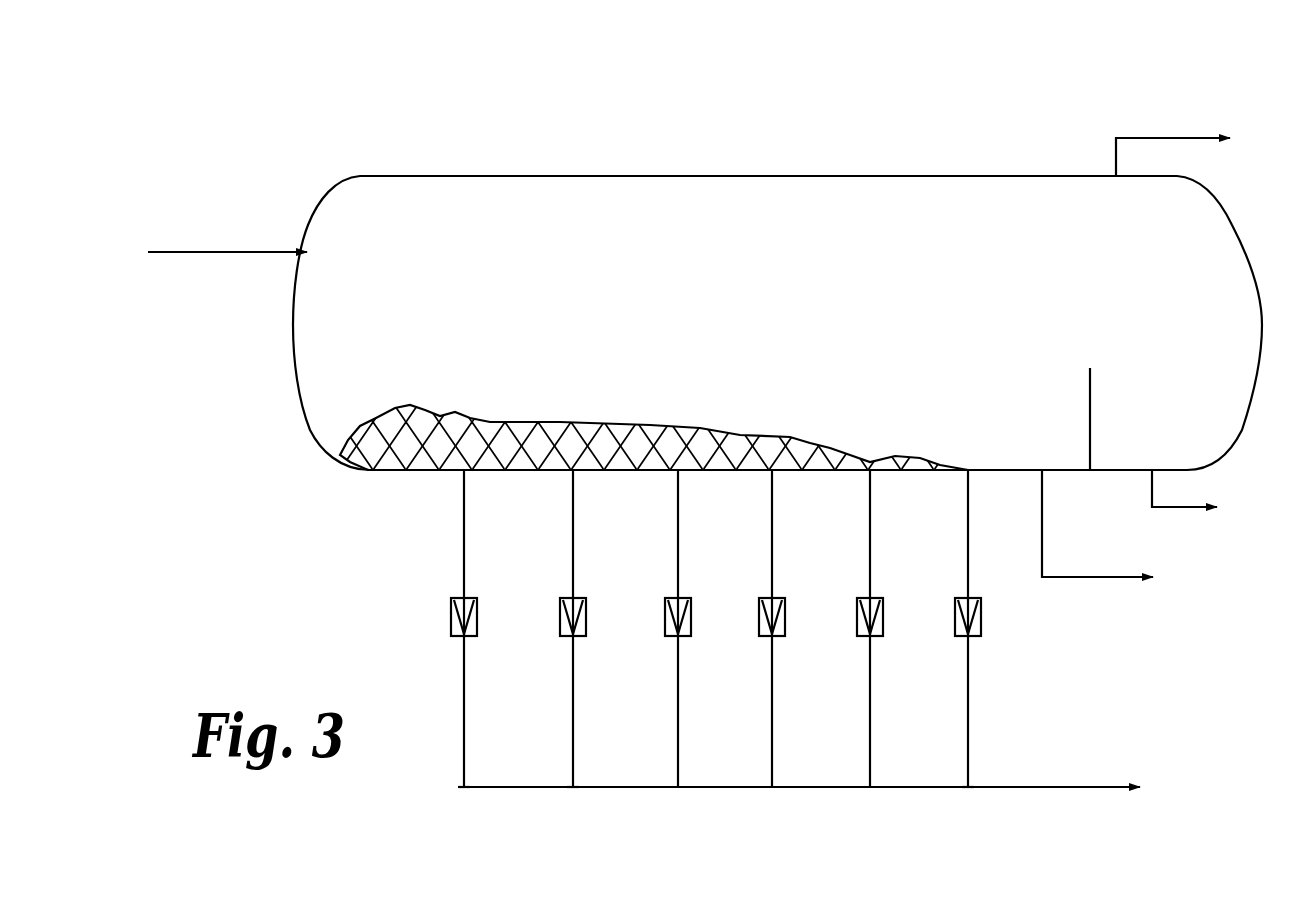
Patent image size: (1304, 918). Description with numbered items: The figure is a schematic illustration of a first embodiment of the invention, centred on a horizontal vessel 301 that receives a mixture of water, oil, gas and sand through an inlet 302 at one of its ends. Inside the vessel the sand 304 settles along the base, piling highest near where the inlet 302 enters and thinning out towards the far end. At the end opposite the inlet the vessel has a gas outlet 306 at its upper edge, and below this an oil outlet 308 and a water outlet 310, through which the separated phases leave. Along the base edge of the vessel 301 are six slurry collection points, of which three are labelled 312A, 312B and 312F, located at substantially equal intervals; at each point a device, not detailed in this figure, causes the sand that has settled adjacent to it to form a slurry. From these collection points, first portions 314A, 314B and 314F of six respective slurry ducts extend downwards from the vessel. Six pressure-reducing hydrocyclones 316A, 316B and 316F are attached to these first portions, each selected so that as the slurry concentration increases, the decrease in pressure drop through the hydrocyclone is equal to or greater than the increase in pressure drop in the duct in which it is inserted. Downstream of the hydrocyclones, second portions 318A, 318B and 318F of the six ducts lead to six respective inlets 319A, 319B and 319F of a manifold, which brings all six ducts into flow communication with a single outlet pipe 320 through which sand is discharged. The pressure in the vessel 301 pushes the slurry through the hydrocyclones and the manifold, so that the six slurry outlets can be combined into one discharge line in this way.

The horizontal vessel 301 is at (1225, 247).
The inlet 302 is at (256, 252).
The sand 304 is at (370, 468).
The gas outlet 306 is at (1152, 138).
The oil outlet 308 is at (1190, 505).
The water outlet 310 is at (1065, 577).
The slurry collection point 312A is at (466, 480).
The slurry collection point 312B is at (574, 480).
The slurry collection point 312F is at (970, 470).
The first portion of slurry duct 314A is at (464, 518).
The first portion of slurry duct 314B is at (573, 518).
The first portion of slurry duct 314F is at (968, 518).
The pressure-reducing hydrocyclone 316A is at (466, 612).
The pressure-reducing hydrocyclone 316B is at (575, 612).
The pressure-reducing hydrocyclone 316F is at (970, 612).
The second portion of slurry duct 318A is at (466, 722).
The second portion of slurry duct 318B is at (575, 722).
The second portion of slurry duct 318F is at (970, 695).
The manifold inlet 319A is at (464, 787).
The manifold inlet 319B is at (573, 787).
The manifold inlet 319F is at (968, 787).
The outlet pipe 320 is at (1002, 787).